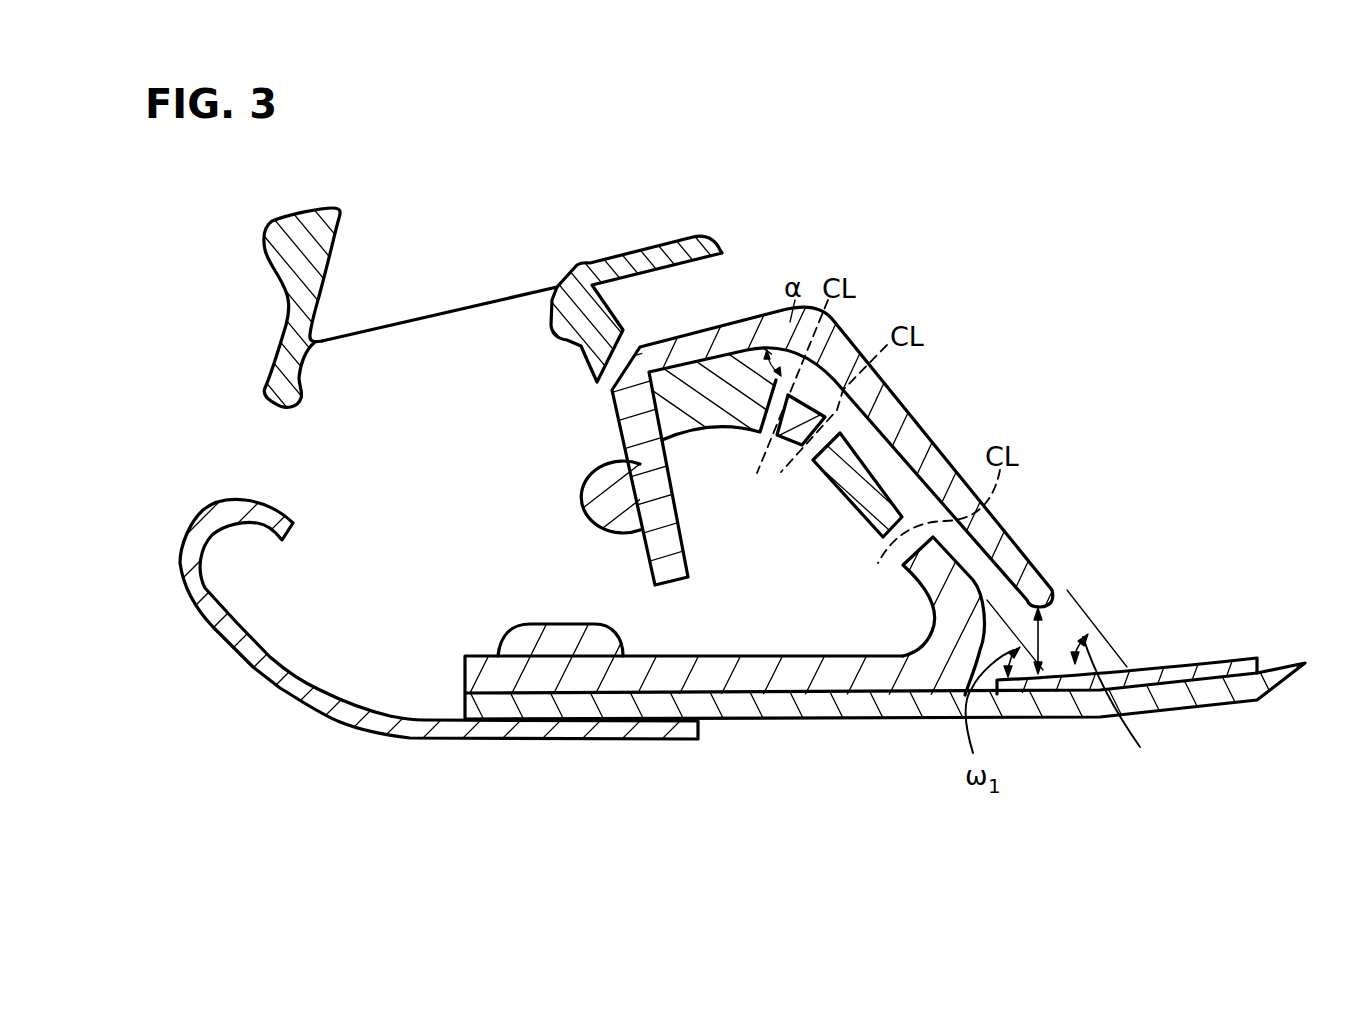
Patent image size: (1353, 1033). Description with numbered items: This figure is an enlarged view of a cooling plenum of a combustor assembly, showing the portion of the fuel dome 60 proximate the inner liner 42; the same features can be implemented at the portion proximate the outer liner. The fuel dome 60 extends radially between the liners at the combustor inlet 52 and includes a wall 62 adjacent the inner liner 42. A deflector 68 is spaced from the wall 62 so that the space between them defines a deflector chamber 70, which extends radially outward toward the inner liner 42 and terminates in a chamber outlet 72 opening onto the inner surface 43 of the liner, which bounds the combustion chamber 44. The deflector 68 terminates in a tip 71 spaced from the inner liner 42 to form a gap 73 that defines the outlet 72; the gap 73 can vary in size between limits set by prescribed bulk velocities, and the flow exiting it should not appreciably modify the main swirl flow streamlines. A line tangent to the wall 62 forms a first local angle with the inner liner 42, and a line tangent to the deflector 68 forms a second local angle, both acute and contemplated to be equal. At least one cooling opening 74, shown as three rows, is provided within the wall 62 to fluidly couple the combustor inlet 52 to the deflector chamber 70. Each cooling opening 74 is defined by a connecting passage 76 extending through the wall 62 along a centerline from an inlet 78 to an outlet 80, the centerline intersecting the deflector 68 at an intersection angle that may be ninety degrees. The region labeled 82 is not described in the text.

The inner liner 42 is at (1193, 693).
The inner surface 43 is at (1187, 665).
The combustion chamber 44 is at (1005, 255).
The combustor inlet 52 is at (405, 495).
The fuel dome 60 is at (887, 612).
The wall 62 is at (718, 367).
The deflector 68 is at (997, 537).
The deflector chamber 70 is at (990, 573).
The tip 71 is at (1035, 575).
The chamber outlet 72 is at (1115, 617).
The gap 73 is at (1040, 645).
The cooling opening 74 is at (784, 393).
The connecting passage 76 is at (822, 448).
The inlet 78 is at (885, 568).
The outlet 80 is at (887, 530).
The cavity 82 is at (740, 551).